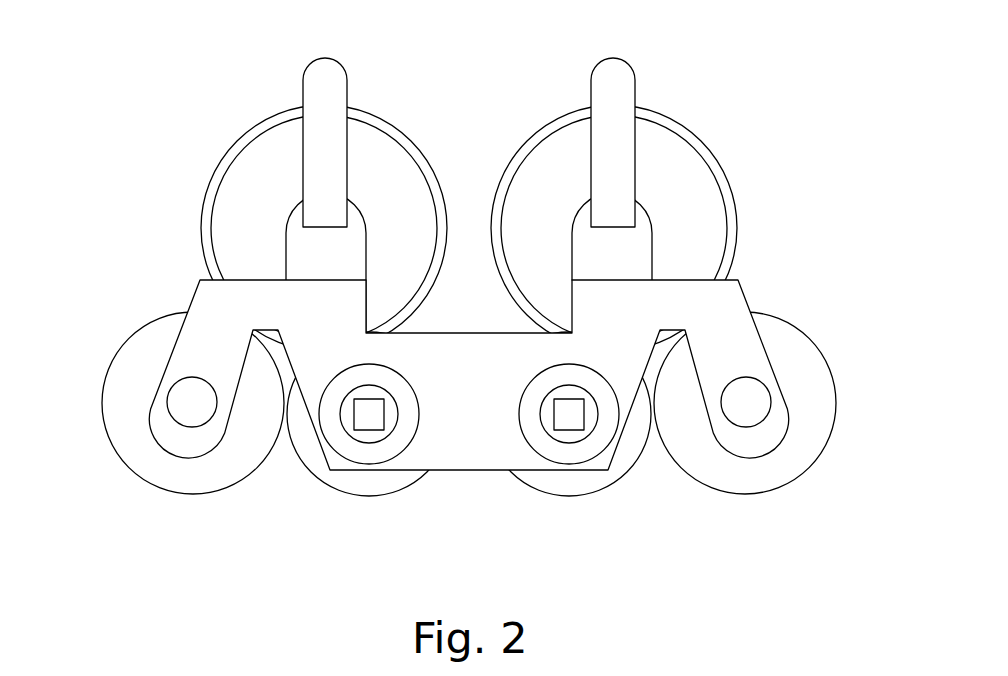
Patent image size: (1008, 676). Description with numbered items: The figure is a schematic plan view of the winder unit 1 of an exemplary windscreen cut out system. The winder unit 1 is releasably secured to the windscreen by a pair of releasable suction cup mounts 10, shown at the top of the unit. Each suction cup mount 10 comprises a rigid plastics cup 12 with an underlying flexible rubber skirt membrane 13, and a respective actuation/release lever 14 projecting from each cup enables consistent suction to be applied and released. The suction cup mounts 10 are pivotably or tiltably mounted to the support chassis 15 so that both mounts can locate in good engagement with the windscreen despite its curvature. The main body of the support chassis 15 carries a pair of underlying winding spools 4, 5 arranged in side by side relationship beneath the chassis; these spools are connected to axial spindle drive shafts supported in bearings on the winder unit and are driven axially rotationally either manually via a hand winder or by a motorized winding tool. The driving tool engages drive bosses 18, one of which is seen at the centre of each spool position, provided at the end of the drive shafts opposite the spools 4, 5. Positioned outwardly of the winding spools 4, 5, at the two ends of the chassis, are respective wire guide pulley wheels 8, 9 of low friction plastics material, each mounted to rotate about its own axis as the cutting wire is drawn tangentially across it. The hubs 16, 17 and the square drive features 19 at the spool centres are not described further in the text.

The winder unit 1 is at (138, 112).
The winding spool 4 is at (360, 503).
The winding spool 5 is at (568, 500).
The wire guide pulley wheel 8 is at (813, 433).
The wire guide pulley wheel 9 is at (118, 418).
The releasable suction cup mount 10 is at (500, 197).
The rigid plastics cup 12 is at (387, 147).
The flexible rubber skirt membrane 13 is at (430, 170).
The actuation/release lever 14 is at (317, 93).
The support chassis 15 is at (452, 337).
The first hub 16 is at (392, 385).
The second hub 17 is at (553, 378).
The drive boss 18 is at (360, 388).
The axle 19 is at (560, 413).